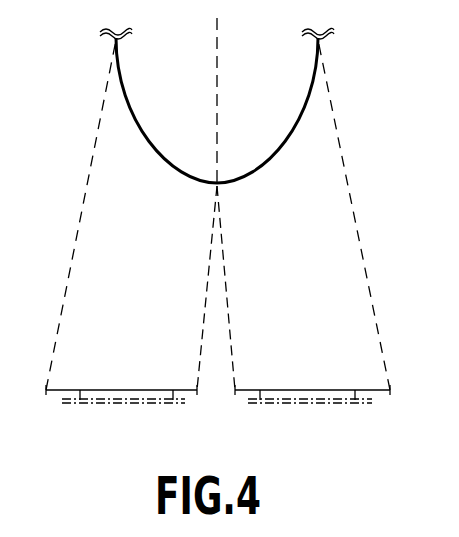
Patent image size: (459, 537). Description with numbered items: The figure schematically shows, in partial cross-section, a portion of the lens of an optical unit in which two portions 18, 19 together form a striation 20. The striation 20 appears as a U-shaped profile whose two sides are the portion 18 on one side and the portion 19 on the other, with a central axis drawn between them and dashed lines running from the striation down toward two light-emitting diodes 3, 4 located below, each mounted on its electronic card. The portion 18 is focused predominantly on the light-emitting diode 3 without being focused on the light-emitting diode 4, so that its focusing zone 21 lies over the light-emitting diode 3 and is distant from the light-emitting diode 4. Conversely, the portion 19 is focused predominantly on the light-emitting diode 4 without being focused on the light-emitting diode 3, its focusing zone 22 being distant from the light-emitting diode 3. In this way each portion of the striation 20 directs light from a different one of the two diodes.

The portion 18 is at (141, 130).
The portion 19 is at (310, 101).
The striation 20 is at (254, 132).
The focusing zone 21 is at (62, 390).
The focusing zone 22 is at (372, 390).
The light-emitting diode 3 is at (112, 398).
The light-emitting diode 4 is at (297, 398).